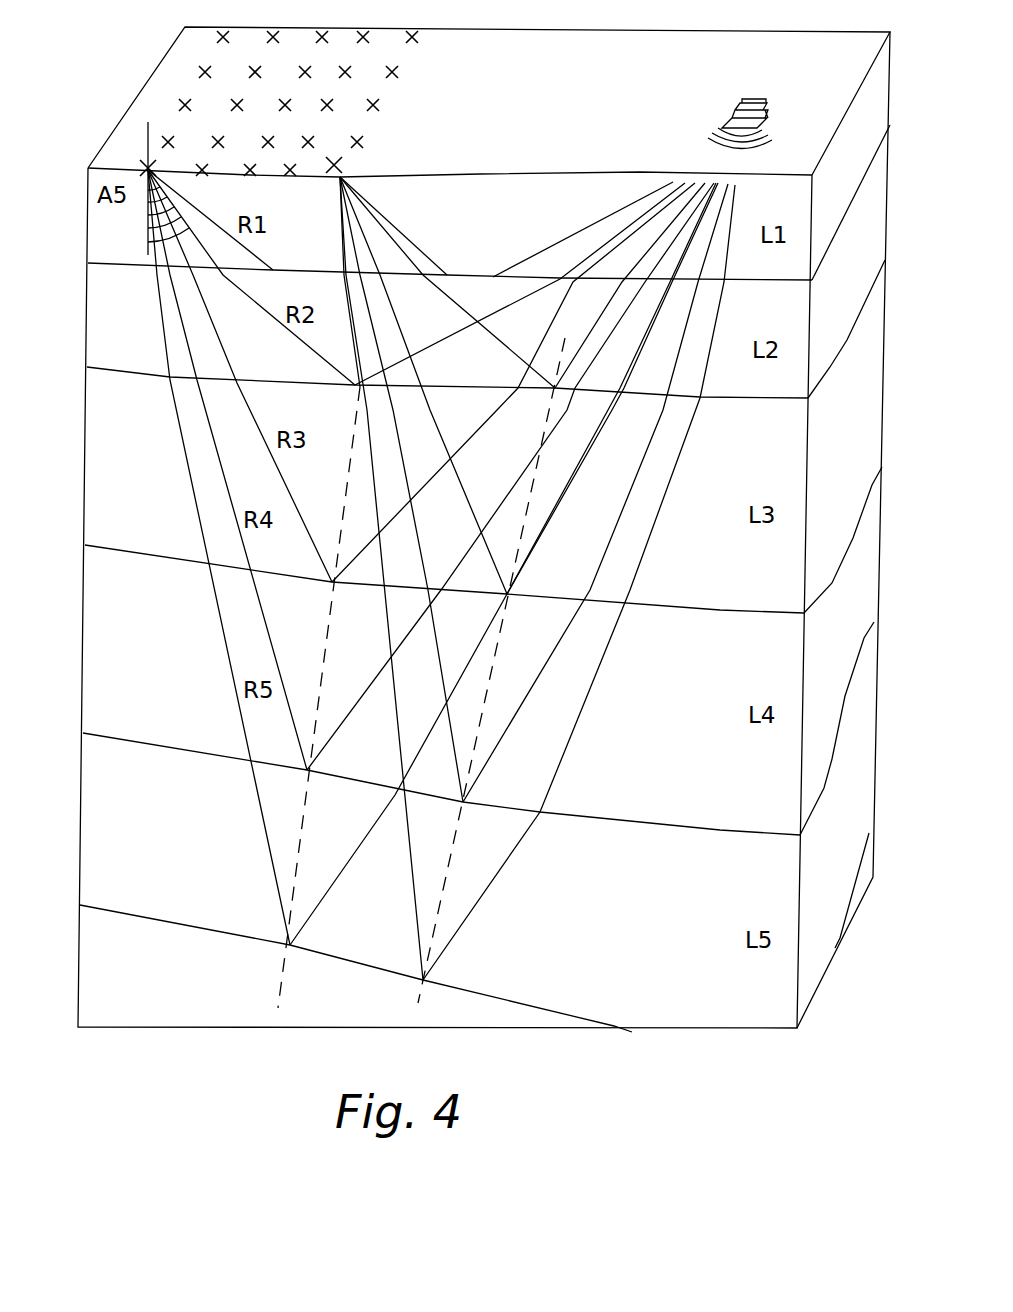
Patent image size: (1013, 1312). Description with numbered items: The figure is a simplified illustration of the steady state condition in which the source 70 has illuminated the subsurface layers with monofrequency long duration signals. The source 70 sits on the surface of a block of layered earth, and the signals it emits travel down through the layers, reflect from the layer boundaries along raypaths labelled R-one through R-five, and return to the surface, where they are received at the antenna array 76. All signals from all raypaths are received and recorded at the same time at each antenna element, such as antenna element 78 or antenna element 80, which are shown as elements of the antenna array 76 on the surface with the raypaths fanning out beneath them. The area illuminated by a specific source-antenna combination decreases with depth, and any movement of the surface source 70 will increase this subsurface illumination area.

The source 70 is at (722, 120).
The antenna array 76 is at (175, 74).
The antenna element 78 is at (343, 165).
The antenna element 80 is at (140, 164).